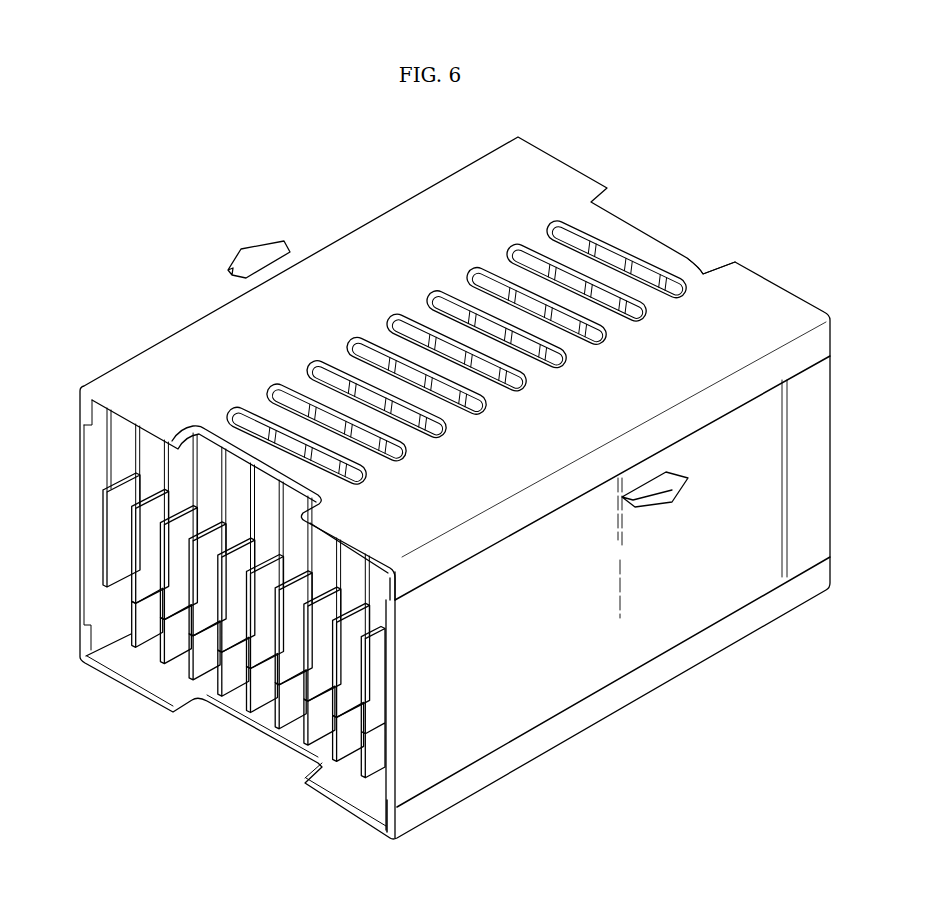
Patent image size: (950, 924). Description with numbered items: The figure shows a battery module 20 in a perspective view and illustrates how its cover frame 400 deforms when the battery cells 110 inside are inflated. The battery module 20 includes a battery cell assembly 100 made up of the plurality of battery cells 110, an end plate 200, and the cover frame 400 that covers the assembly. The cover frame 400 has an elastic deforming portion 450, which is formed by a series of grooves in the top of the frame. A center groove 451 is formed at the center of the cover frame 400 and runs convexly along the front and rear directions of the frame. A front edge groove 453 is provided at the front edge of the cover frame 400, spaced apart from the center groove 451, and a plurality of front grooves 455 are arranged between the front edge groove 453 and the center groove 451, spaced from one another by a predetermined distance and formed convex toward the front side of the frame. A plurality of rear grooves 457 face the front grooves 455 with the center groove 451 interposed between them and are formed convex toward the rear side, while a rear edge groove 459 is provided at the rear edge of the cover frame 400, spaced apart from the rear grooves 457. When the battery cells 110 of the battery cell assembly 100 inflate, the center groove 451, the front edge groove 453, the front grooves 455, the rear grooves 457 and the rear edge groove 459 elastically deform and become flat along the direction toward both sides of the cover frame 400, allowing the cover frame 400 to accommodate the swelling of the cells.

The battery module 20 is at (252, 205).
The battery cell assembly 100 is at (166, 682).
The battery cells 110 is at (262, 698).
The end plate 200 is at (557, 675).
The cover frame 400 is at (768, 305).
The elastic deforming portion 450 is at (435, 303).
The center groove 451 is at (404, 318).
The front edge groove 453 is at (223, 442).
The front grooves 455 is at (274, 385).
The rear grooves 457 is at (511, 246).
The rear edge groove 459 is at (688, 260).